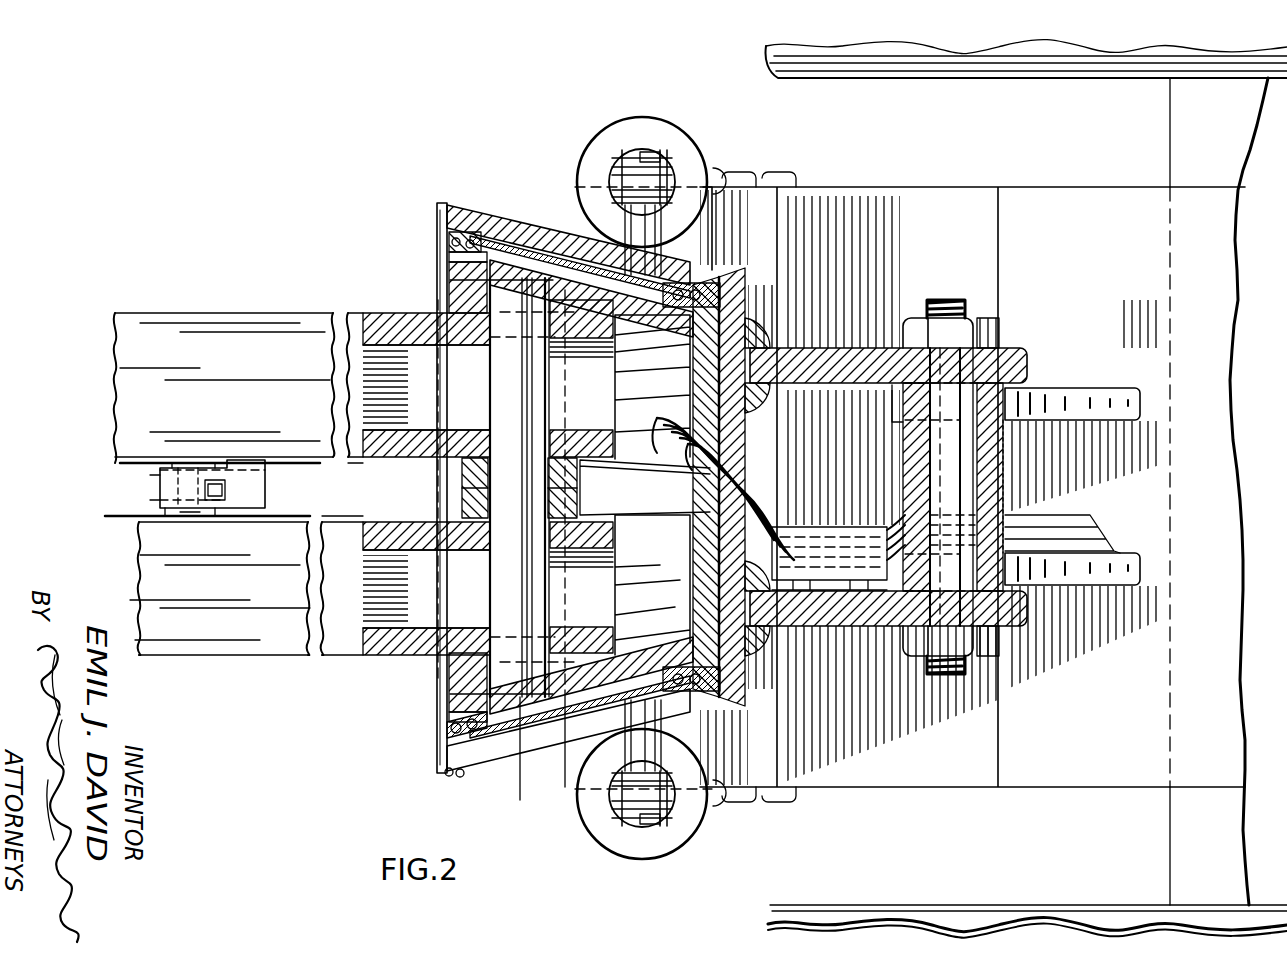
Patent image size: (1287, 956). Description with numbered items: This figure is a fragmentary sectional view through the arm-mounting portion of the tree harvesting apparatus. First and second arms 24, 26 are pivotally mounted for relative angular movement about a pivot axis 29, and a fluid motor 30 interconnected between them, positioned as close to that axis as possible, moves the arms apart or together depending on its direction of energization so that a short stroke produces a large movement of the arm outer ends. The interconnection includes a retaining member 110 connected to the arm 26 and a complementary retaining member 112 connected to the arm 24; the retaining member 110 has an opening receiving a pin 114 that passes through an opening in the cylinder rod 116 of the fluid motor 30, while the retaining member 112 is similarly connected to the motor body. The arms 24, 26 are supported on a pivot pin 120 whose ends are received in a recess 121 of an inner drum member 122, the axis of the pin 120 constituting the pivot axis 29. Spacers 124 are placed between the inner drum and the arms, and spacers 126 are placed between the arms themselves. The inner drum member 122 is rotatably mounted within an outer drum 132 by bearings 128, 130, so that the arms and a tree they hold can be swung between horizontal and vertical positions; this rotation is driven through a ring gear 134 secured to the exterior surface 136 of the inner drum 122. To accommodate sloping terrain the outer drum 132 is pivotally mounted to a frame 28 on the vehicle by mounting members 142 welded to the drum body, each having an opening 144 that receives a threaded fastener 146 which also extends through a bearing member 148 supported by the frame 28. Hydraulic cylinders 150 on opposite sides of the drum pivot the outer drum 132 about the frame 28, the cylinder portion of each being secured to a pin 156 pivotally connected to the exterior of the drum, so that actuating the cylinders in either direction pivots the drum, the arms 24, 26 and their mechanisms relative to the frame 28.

The first arm 24 is at (330, 660).
The second arm 26 is at (348, 310).
The frame 28 is at (1050, 540).
The pivot axis 29 is at (510, 793).
The fluid motor 30 is at (150, 470).
The retaining member 110 is at (256, 486).
The complementary retaining member 112 is at (182, 517).
The pin 114 is at (190, 462).
The cylinder rod 116 is at (160, 490).
The pivot pin 120 is at (505, 390).
The recess 121 is at (455, 258).
The inner drum member 122 is at (452, 240).
The spacers 124 is at (450, 300).
The spacers 126 is at (462, 488).
The bearing 128 is at (470, 228).
The bearing 130 is at (750, 290).
The outer drum 132 is at (510, 215).
The ring gear 134 is at (530, 245).
The exterior surface 136 is at (700, 283).
The mounting members 142 is at (832, 352).
The opening 144 is at (1003, 355).
The threaded fastener 146 is at (939, 502).
The bearing member 148 is at (900, 485).
The hydraulic cylinders 150 is at (702, 146).
The pin 156 is at (648, 158).